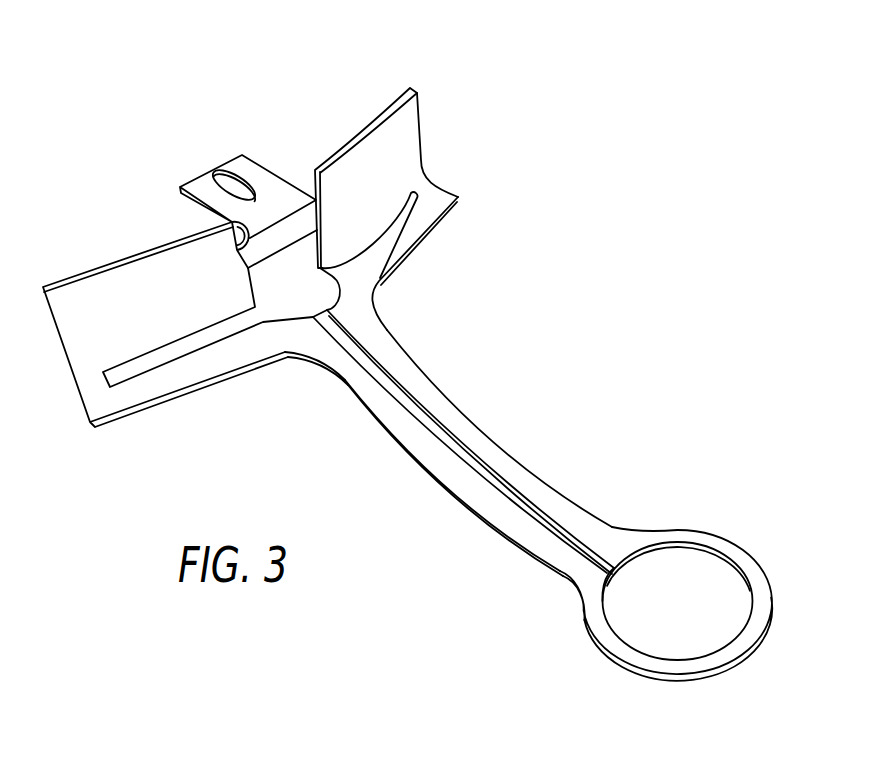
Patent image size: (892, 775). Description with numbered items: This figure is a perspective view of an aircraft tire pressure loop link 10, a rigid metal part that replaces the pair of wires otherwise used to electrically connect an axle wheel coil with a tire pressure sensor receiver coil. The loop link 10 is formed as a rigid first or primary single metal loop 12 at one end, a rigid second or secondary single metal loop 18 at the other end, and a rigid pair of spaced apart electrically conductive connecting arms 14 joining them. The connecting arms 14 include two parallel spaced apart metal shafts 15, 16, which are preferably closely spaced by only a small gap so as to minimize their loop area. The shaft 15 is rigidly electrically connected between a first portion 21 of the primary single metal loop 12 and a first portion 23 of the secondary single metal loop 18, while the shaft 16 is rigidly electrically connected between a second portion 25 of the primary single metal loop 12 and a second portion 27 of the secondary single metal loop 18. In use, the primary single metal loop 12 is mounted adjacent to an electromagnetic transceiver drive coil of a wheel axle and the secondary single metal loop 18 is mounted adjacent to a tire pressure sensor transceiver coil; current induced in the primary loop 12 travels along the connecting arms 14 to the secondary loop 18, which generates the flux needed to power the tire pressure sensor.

The aircraft tire pressure loop link 10 is at (596, 233).
The first or primary single metal loop 12 is at (444, 121).
The pair of spaced apart electrically conductive connecting arms 14 is at (534, 442).
The shaft 15 is at (422, 381).
The shaft 16 is at (398, 420).
The second or secondary single metal loop 18 is at (541, 635).
The first portion of the first or primary single metal loop 21 is at (355, 297).
The first portion of the second or secondary single metal loop 23 is at (621, 560).
The second portion of the first or primary single metal loop 25 is at (297, 340).
The second portion of the second or secondary single metal loop 27 is at (595, 573).